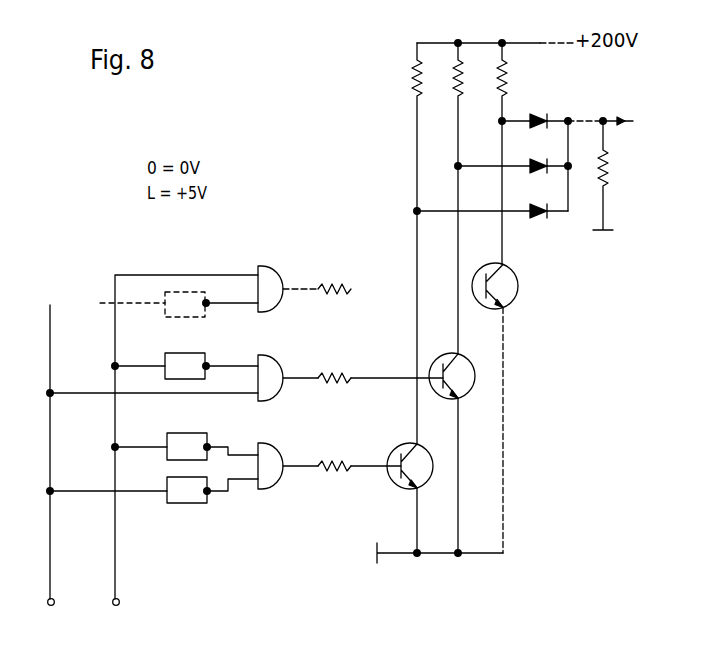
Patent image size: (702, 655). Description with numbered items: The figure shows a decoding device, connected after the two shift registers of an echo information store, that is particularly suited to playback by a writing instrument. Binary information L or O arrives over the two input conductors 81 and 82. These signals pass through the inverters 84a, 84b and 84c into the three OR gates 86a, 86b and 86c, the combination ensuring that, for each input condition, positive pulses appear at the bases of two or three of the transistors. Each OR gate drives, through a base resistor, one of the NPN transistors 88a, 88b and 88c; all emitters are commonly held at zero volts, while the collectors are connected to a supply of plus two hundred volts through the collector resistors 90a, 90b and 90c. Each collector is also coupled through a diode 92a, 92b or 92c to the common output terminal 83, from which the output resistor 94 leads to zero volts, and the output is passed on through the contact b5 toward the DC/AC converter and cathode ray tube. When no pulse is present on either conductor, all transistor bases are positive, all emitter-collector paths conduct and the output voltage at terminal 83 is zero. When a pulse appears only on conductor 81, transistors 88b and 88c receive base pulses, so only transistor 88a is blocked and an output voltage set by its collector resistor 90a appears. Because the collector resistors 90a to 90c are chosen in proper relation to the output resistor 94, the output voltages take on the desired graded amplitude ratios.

The input conductor 81 is at (48, 441).
The input conductor 82 is at (113, 426).
The inverter 84a is at (172, 308).
The inverter 84b is at (191, 364).
The inverter 84c is at (186, 442).
The OR gate 86a is at (268, 267).
The OR gate 86b is at (266, 396).
The OR gate 86c is at (266, 490).
The NPN transistor 88a is at (508, 292).
The NPN transistor 88b is at (462, 385).
The NPN transistor 88c is at (397, 484).
The collector resistor 90a is at (508, 80).
The collector resistor 90b is at (453, 89).
The collector resistor 90c is at (412, 88).
The diode 92a is at (532, 126).
The diode 92b is at (514, 179).
The diode 92c is at (532, 217).
The common output terminal 83 is at (604, 118).
The contact b5 is at (632, 118).
The output resistor 94 is at (611, 176).